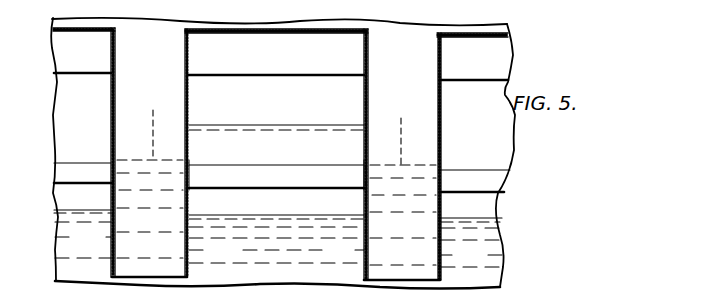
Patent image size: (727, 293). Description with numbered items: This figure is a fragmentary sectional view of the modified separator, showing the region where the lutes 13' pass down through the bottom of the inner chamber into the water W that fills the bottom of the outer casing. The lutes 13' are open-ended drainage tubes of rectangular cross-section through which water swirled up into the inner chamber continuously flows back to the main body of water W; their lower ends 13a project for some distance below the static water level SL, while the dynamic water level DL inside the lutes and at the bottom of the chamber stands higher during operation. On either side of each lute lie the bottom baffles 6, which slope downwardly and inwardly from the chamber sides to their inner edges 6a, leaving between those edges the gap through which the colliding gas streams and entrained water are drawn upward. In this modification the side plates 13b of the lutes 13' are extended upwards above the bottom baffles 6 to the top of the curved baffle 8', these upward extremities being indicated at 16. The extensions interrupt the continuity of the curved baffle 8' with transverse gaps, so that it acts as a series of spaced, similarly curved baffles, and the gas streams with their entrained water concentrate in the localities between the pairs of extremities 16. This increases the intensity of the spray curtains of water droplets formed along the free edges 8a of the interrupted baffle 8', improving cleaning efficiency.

The bottom baffle 6 is at (262, 140).
The inner edge of bottom baffle 6a is at (250, 190).
The edge of curved baffle 8a is at (478, 82).
The curved baffle 8' is at (299, 56).
The upward extremity of lute side plates 16 is at (185, 54).
The dynamic water level DL is at (269, 127).
The lute 13' is at (276, 163).
The lower end of lute 13a is at (117, 246).
The side plate of lute 13b is at (452, 250).
The static water level SL is at (477, 222).
The water W is at (277, 275).